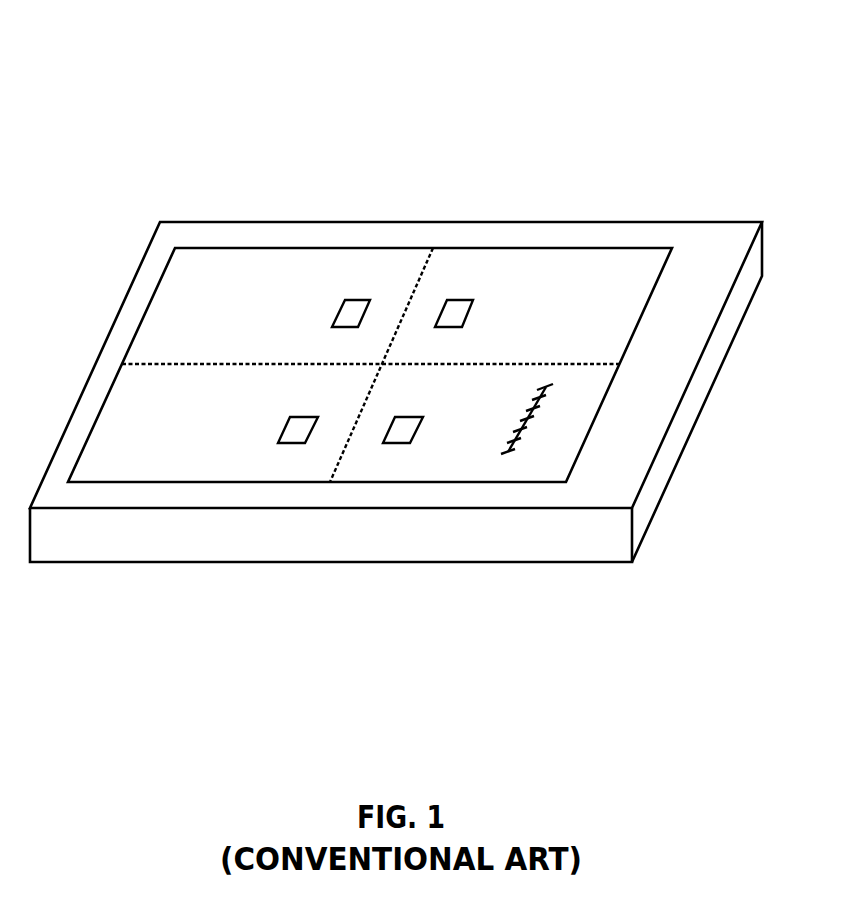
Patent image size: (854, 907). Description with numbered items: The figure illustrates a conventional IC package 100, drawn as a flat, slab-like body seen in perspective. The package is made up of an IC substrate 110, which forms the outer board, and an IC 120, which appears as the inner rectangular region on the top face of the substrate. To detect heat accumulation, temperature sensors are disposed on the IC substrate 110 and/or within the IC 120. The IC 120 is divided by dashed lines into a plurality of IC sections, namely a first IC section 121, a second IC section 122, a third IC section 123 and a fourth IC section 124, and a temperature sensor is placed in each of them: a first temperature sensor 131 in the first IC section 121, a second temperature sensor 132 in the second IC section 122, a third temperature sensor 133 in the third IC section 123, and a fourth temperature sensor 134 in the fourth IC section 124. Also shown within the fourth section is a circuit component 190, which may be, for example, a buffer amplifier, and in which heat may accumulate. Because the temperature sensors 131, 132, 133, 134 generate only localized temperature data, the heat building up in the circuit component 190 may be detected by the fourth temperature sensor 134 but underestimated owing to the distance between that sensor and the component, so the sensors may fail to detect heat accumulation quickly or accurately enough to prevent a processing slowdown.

The IC package 100 is at (75, 55).
The IC substrate 110 is at (690, 408).
The IC 120 is at (540, 247).
The first IC section 121 is at (172, 356).
The second IC section 122 is at (616, 356).
The third IC section 123 is at (119, 470).
The fourth IC section 124 is at (563, 472).
The first temperature sensor 131 is at (338, 313).
The second temperature sensor 132 is at (469, 312).
The third temperature sensor 133 is at (288, 429).
The fourth temperature sensor 134 is at (419, 430).
The circuit component 190 is at (528, 418).